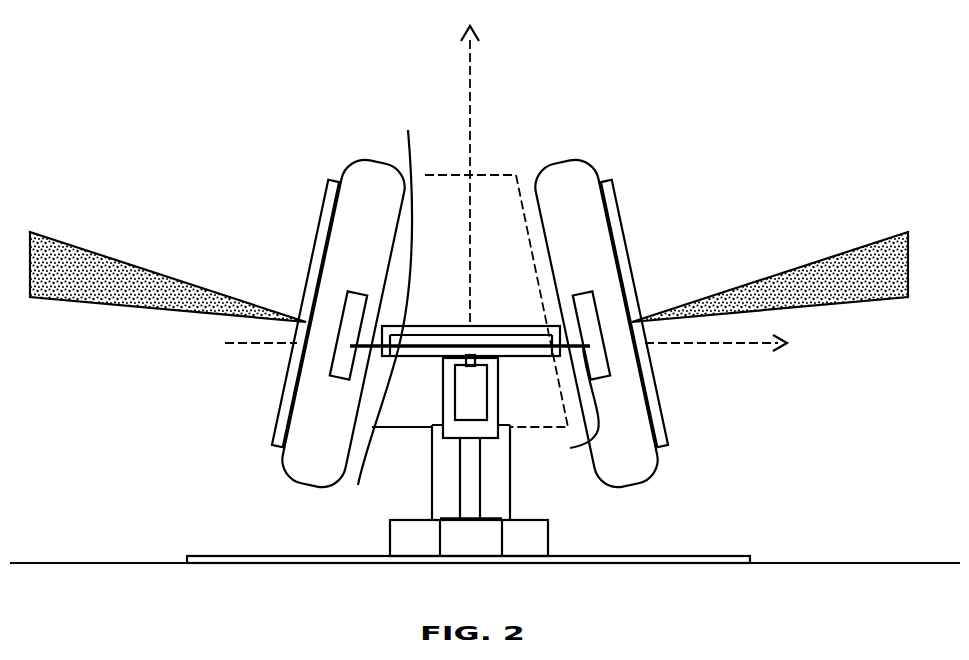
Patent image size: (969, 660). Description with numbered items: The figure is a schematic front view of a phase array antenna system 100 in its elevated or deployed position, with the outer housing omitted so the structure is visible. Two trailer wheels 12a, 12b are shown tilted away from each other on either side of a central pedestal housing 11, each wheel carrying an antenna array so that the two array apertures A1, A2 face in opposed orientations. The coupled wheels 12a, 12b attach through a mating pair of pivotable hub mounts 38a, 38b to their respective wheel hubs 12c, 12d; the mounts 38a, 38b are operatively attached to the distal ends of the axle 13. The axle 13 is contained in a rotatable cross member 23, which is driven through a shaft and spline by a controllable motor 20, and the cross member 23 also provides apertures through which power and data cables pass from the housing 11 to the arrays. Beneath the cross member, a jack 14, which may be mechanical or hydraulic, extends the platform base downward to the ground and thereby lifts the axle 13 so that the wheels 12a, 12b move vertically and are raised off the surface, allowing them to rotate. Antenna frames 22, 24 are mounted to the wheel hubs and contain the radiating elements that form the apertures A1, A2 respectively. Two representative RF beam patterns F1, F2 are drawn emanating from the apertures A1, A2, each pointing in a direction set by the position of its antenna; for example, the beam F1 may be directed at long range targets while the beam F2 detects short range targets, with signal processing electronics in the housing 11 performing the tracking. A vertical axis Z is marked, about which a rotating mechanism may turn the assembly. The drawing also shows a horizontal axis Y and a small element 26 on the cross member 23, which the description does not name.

The phase array antenna system 100 is at (201, 87).
The pedestal housing 11 is at (500, 175).
The first wheel 12a is at (340, 248).
The second wheel 12b is at (600, 248).
The first wheel hub 12c is at (352, 346).
The second wheel hub 12d is at (602, 352).
The axle 13 is at (409, 229).
The jack 14 is at (510, 488).
The controllable motor 20 is at (443, 408).
The antenna frame 22 is at (338, 180).
The cross member 23 is at (455, 326).
The antenna frame 24 is at (602, 180).
The pivot knob 26 is at (471, 354).
The pivotable hub mount 38a is at (342, 340).
The pivotable hub mount 38b is at (467, 431).
The first antenna array aperture A1 is at (307, 297).
The second antenna array aperture A2 is at (633, 297).
The RF beam pattern F1 is at (168, 277).
The RF beam pattern F2 is at (770, 277).
The Z-axis Z is at (470, 163).
The Y axis Y is at (518, 343).